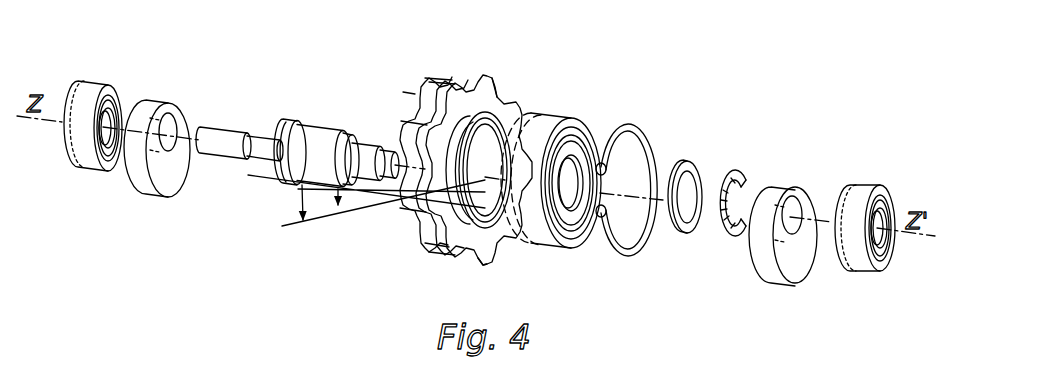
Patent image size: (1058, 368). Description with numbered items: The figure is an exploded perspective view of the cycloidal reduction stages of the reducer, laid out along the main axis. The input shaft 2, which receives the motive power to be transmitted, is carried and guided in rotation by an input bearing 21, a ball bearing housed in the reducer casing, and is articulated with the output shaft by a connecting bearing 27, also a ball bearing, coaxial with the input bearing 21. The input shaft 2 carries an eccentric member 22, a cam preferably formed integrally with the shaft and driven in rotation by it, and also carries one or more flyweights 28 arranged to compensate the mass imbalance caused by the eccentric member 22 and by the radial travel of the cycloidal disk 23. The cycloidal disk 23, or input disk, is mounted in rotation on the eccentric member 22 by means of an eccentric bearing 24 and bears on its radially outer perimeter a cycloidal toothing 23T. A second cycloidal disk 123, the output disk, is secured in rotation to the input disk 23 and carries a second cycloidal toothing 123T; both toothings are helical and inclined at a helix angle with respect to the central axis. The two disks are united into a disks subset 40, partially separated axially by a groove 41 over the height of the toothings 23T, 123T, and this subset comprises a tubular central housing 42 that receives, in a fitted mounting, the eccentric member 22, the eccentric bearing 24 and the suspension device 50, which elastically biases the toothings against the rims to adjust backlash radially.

The input shaft 2 is at (223, 138).
The input bearing 21 is at (90, 88).
The eccentric member 22 is at (325, 132).
The cycloidal disk 23 is at (440, 82).
The cycloidal toothing 23T is at (415, 94).
The eccentric bearing 24 is at (562, 120).
The connecting bearing 27 is at (860, 192).
The flyweight 28 is at (140, 192).
The disks subset 40 is at (464, 168).
The groove 41 is at (455, 80).
The central housing 42 is at (480, 208).
The suspension device 50 is at (582, 252).
The second cycloidal disk 123 is at (483, 254).
The second cycloidal toothing 123T is at (497, 80).